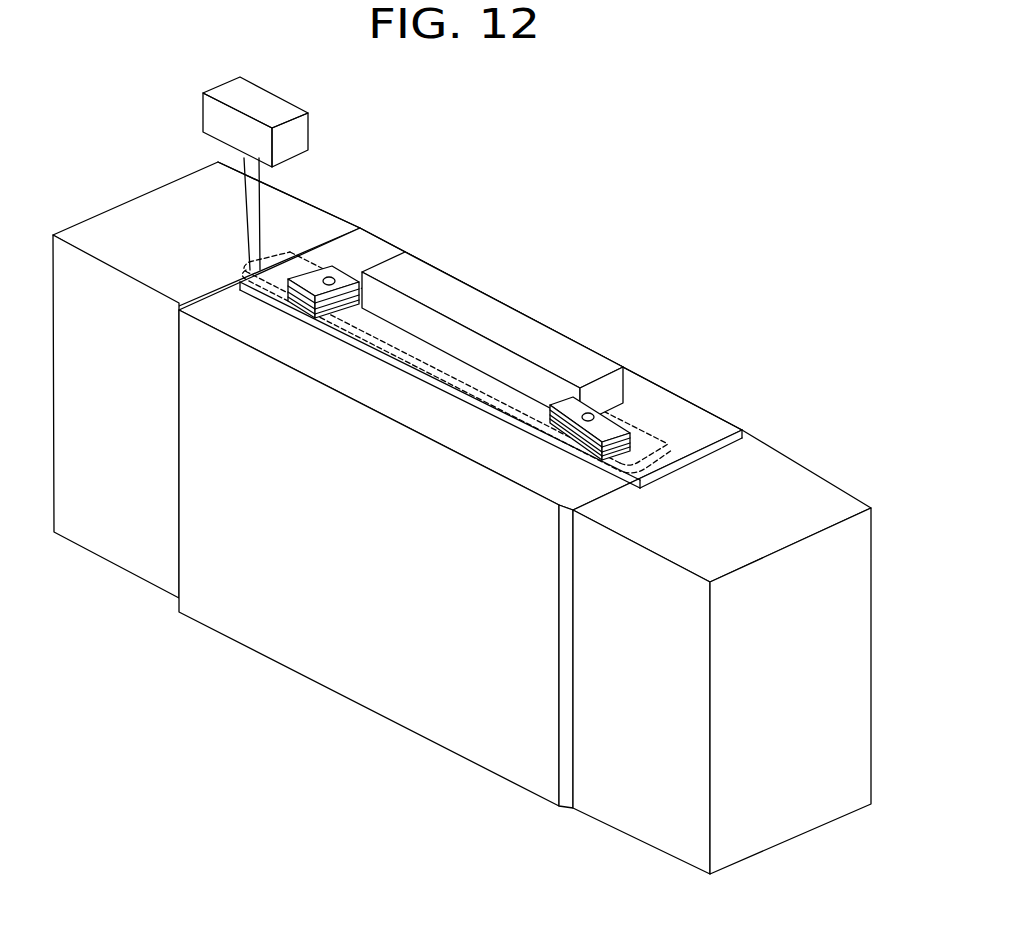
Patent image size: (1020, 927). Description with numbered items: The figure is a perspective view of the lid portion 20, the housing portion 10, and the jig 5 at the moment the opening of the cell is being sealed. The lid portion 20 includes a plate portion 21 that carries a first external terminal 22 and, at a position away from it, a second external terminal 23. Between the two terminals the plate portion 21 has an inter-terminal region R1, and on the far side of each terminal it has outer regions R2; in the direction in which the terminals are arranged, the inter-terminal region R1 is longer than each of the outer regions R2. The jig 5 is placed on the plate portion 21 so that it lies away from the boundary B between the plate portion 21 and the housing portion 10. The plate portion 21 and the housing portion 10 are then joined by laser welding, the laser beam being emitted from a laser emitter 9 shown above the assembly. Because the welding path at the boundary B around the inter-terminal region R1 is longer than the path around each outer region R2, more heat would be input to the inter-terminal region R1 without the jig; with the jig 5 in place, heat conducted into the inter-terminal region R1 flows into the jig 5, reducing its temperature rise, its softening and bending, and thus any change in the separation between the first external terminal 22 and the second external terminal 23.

The laser emitter 9 is at (277, 140).
The housing portion 10 is at (657, 468).
The lid portion 20 is at (348, 243).
The plate portion 21 is at (617, 374).
The first external terminal 22 is at (318, 273).
The second external terminal 23 is at (575, 392).
The jig 5 is at (482, 355).
The boundary B is at (650, 437).
The inter-terminal region R1 is at (435, 348).
The outer regions R2 is at (278, 268).